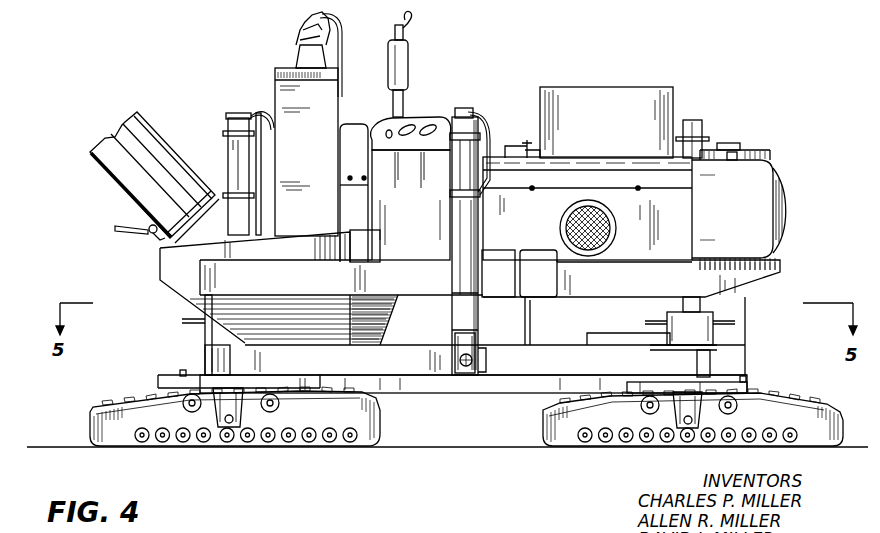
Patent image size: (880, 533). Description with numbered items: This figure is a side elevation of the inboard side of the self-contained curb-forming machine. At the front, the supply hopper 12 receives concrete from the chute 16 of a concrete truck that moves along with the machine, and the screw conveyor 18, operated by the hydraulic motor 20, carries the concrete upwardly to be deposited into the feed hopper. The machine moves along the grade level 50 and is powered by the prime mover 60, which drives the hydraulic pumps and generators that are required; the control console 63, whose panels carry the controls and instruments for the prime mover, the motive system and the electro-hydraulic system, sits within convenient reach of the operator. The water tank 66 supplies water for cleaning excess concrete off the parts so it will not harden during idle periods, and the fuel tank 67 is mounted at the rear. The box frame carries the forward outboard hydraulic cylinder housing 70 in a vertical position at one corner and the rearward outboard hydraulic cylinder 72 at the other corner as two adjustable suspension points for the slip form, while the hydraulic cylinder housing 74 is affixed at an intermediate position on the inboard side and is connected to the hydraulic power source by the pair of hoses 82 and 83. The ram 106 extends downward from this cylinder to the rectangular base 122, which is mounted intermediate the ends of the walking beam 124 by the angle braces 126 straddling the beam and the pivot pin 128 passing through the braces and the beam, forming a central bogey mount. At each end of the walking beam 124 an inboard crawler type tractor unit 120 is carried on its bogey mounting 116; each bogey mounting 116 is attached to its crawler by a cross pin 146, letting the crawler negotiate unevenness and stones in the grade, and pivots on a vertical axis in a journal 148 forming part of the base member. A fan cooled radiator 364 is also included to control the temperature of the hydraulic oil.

The supply hopper 12 is at (160, 272).
The chute 16 is at (147, 128).
The screw conveyor 18 is at (288, 107).
The hydraulic motor 20 is at (290, 44).
The grade level 50 is at (72, 447).
The prime mover 60 is at (422, 117).
The control console 63 is at (608, 87).
The water tank 66 is at (746, 155).
The fuel tank 67 is at (776, 176).
The forward outboard hydraulic cylinder housing 70 is at (238, 158).
The rearward outboard hydraulic cylinder 72 is at (704, 140).
The hydraulic cylinder housing 74 is at (462, 160).
The hose 82 is at (470, 112).
The hose 83 is at (487, 126).
The ram 106 is at (462, 300).
The bogey mounting 116 is at (226, 403).
The crawler type tractor unit 120 is at (150, 406).
The rectangular base 122 is at (455, 330).
The walking beam 124 is at (508, 376).
The angle brace 126 is at (480, 354).
The pivot pin 128 is at (466, 366).
The cross pin 146 is at (232, 443).
The journal 148 is at (207, 357).
The fan cooled radiator 364 is at (598, 334).